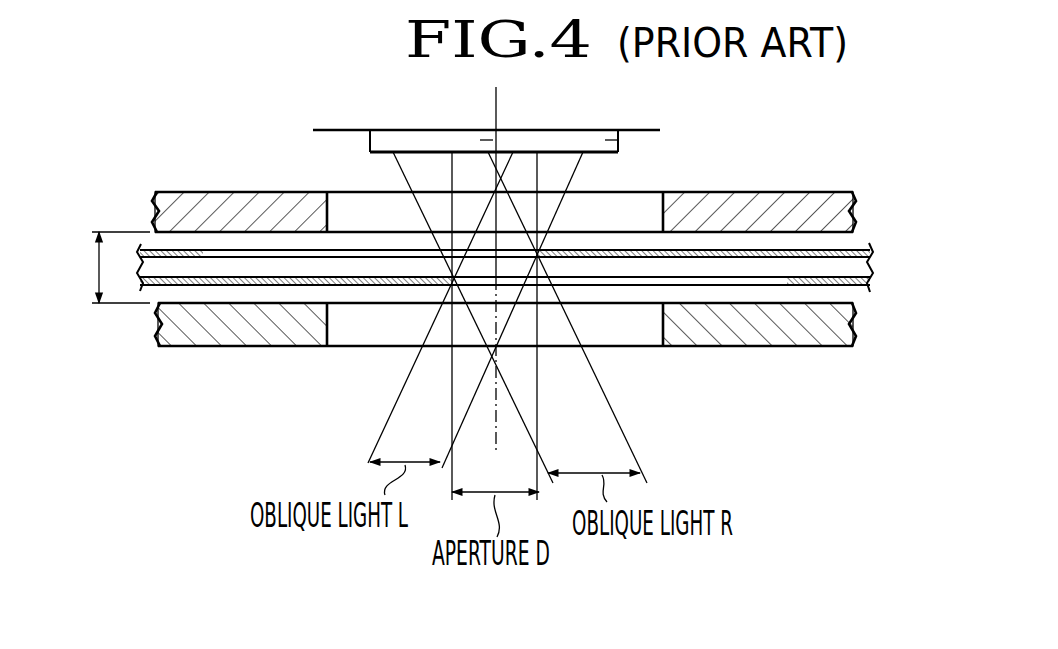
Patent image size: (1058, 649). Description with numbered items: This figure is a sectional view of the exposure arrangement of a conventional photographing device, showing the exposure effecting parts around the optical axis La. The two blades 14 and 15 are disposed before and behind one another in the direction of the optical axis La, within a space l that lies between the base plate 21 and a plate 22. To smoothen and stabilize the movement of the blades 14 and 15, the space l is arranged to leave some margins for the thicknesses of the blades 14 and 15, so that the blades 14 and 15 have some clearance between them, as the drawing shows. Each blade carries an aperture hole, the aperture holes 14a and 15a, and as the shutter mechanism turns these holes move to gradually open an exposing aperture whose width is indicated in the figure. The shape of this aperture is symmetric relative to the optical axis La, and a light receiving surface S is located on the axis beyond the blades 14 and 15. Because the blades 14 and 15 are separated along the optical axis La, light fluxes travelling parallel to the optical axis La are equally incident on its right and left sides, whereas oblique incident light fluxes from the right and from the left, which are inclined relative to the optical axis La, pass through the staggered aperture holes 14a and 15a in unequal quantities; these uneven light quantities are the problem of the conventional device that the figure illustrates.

The base plate 21 is at (230, 206).
The blade 14 is at (790, 250).
The plate 22 is at (262, 327).
The blade 15 is at (815, 346).
The aperture hole 14a is at (368, 252).
The aperture hole 15a is at (620, 287).
The light receiving surface S is at (618, 140).
The optical axis La is at (492, 103).
The space l is at (112, 267).